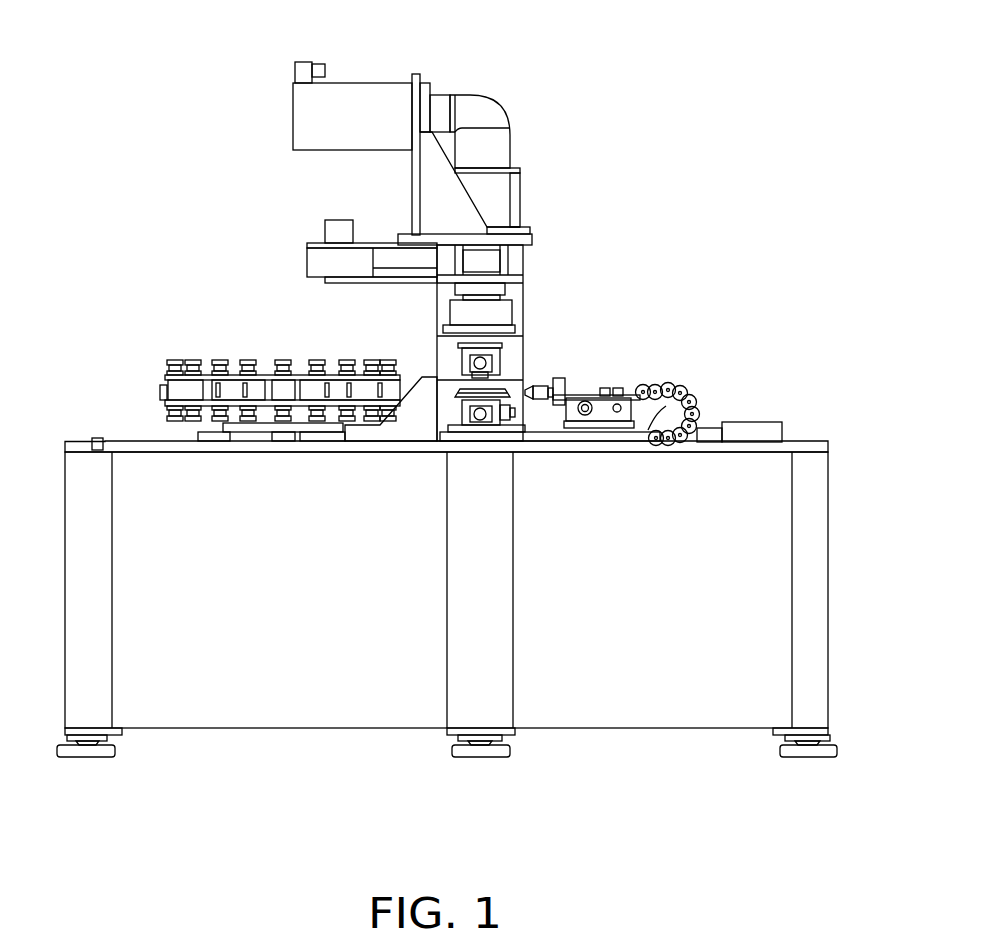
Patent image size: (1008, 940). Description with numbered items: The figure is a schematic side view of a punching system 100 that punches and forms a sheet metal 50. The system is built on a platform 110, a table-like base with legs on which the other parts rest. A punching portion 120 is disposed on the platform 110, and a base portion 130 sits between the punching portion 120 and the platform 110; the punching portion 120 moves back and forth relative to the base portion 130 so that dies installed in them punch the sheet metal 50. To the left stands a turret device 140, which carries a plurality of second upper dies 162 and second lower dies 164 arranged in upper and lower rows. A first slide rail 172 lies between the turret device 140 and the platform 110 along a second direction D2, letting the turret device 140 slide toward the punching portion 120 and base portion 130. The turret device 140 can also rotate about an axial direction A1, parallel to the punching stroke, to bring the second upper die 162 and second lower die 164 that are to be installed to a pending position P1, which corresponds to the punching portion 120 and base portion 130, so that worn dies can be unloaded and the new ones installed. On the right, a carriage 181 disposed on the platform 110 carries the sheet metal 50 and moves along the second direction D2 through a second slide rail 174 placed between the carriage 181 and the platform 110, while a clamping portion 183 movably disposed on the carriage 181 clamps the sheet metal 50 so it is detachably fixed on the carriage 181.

The punching system 100 is at (666, 125).
The platform 110 is at (816, 481).
The punching portion 120 is at (518, 354).
The base portion 130 is at (453, 410).
The turret device 140 is at (240, 312).
The second upper dies 162 is at (178, 362).
The second lower dies 164 is at (170, 417).
The first slide rail 172 is at (200, 437).
The second slide rail 174 is at (700, 399).
The carriage 181 is at (620, 395).
The clamping portion 183 is at (538, 390).
The sheet metal 50 is at (508, 395).
The axial direction A1 is at (282, 360).
The second direction D2 is at (366, 345).
The pending position P1 is at (405, 370).